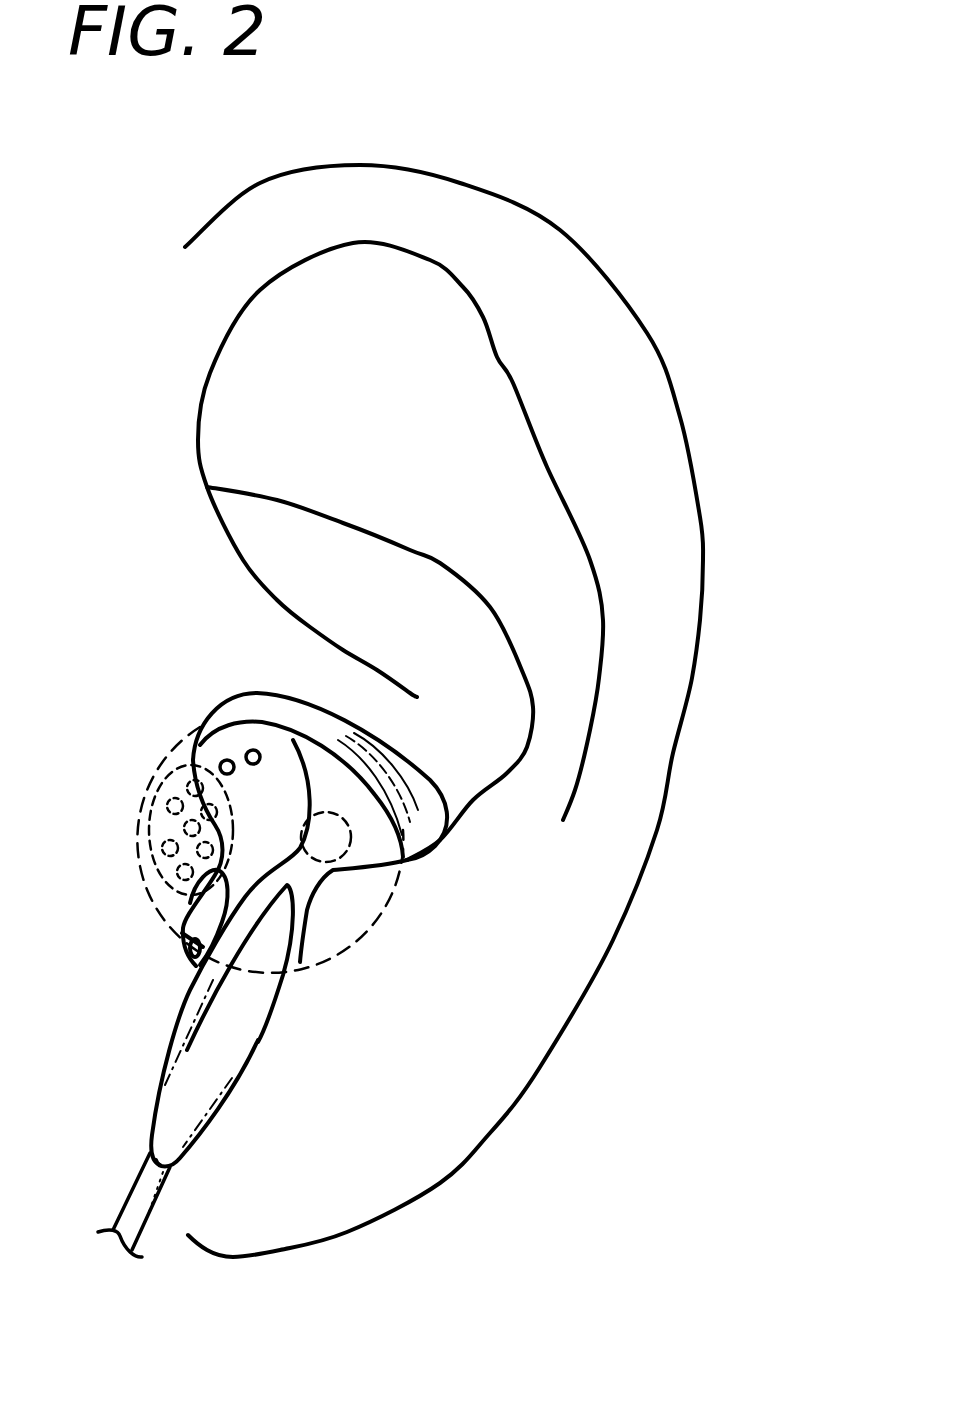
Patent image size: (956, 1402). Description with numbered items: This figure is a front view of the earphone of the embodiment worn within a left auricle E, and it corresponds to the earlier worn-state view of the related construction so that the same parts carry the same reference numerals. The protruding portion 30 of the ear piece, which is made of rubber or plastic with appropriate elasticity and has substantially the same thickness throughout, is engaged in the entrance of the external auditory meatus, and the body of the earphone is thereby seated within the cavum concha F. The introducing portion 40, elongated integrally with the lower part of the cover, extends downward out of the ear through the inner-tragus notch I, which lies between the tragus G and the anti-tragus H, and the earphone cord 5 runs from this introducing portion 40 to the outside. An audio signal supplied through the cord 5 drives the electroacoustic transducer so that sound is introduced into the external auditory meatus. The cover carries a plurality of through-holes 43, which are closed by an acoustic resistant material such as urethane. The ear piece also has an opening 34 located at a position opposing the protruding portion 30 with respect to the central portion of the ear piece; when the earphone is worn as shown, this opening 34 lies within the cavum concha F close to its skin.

The earphone cord 5 is at (147, 1218).
The protruding portion 30 is at (147, 890).
The opening 34 is at (333, 843).
The introducing portion 40 is at (232, 1052).
The through-holes 43 is at (251, 748).
The auricle E is at (759, 439).
The cavum concha F is at (427, 827).
The tragus G is at (212, 822).
The anti-tragus H is at (367, 883).
The inner-tragus notch I is at (195, 966).